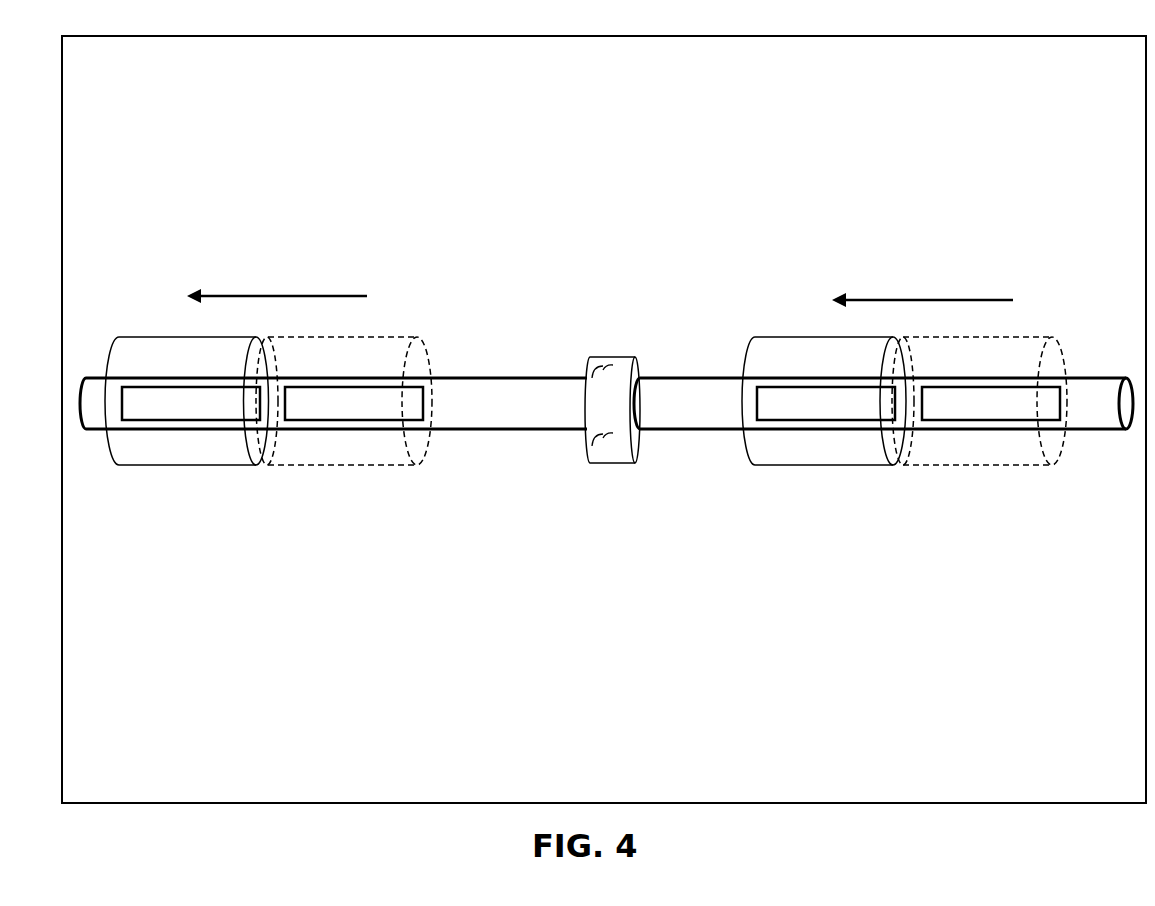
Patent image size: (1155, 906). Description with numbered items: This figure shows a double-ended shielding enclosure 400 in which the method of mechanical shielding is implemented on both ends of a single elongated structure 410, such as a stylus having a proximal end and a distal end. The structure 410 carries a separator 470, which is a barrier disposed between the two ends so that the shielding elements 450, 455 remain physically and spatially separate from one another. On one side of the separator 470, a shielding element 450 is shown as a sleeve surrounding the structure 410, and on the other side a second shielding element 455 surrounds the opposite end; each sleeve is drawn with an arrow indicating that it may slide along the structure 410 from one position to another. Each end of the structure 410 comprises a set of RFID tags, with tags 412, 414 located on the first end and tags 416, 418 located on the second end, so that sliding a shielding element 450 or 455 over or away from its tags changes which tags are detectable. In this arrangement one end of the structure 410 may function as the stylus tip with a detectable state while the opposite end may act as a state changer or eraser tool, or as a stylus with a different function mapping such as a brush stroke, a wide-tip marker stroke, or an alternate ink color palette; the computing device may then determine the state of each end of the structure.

The tube assembly 400 is at (606, 333).
The tube 410 is at (606, 375).
The RFID tag 412 is at (191, 403).
The RFID tag 414 is at (354, 403).
The RFID tag 416 is at (826, 403).
The RFID tag 418 is at (991, 403).
The shielding element 450 is at (183, 437).
The shielding element 455 is at (824, 437).
The separator 470 is at (577, 437).